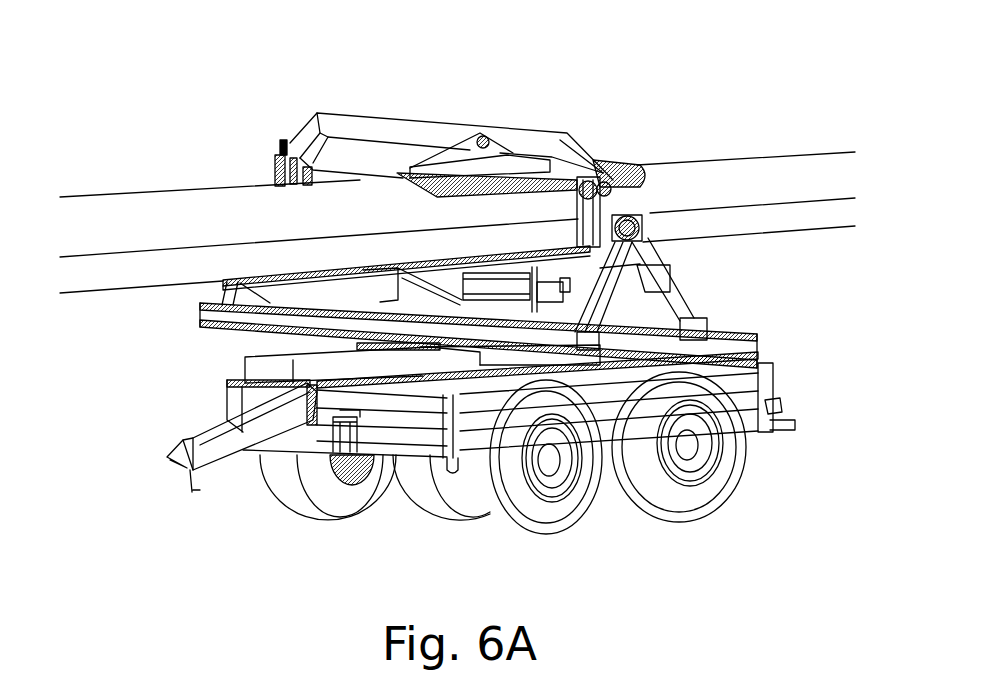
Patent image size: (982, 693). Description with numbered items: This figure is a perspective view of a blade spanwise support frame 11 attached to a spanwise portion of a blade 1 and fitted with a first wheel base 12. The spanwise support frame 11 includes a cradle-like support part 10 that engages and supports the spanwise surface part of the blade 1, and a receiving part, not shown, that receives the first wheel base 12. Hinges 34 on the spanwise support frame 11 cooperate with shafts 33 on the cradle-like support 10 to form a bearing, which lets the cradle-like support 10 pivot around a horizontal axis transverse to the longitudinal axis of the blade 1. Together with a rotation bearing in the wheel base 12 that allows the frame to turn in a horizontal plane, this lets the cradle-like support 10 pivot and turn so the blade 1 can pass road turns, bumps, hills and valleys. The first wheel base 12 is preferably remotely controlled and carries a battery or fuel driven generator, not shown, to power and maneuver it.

The blade 1 is at (760, 153).
The cradle-like support part 10 is at (371, 113).
The blade spanwise support frame 11 is at (677, 303).
The first wheel base 12 is at (450, 527).
The shafts 33 is at (644, 230).
The hinges 34 is at (627, 228).